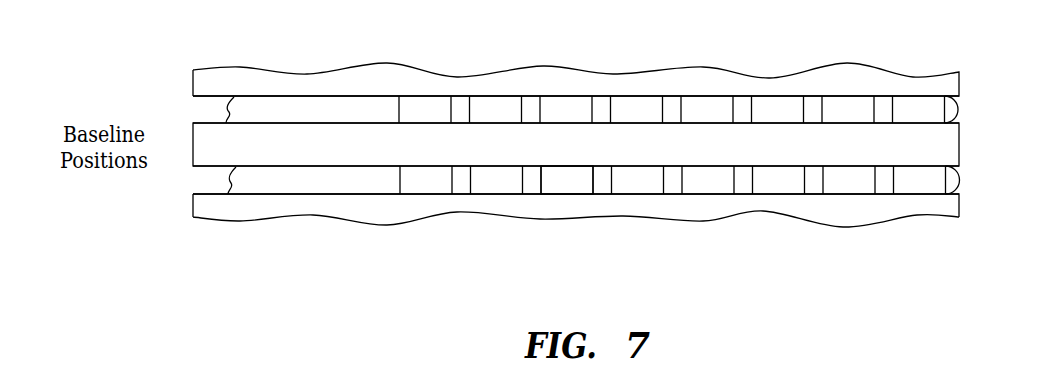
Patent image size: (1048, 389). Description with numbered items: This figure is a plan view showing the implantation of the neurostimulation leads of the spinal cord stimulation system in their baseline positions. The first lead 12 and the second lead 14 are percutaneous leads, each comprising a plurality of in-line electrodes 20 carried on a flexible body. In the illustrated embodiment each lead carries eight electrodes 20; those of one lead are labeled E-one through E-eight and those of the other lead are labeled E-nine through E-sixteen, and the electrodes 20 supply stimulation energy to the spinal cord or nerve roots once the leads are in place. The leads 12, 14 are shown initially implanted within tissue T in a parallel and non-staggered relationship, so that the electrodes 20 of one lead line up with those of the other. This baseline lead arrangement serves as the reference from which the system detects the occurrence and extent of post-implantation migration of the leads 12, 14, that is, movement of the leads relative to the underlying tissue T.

The first implantable neurostimulation lead 12 is at (959, 110).
The second implantable neurostimulation lead 14 is at (959, 182).
The electrode 20 is at (587, 185).
The tissue T is at (710, 67).